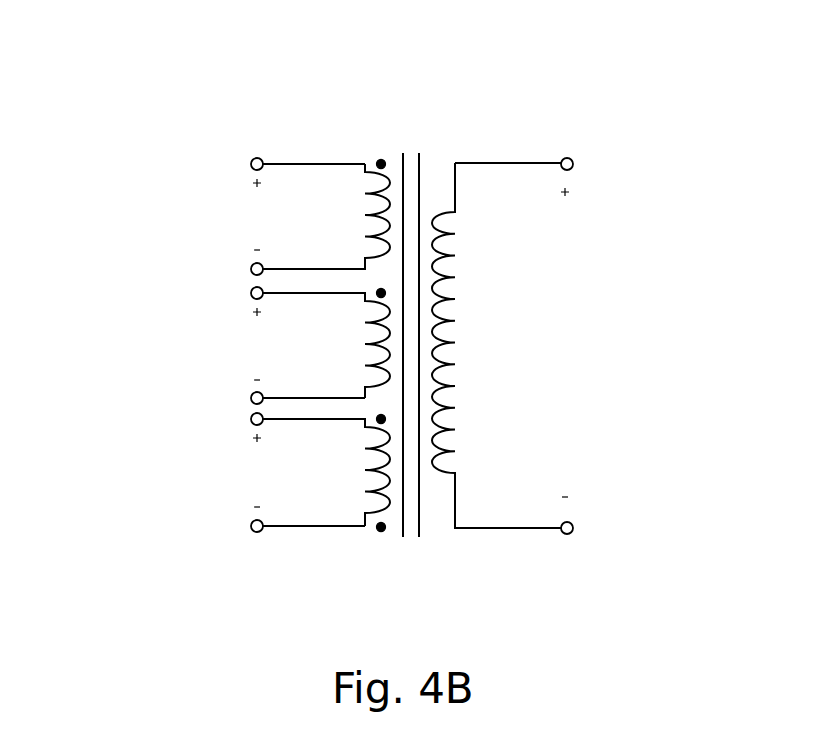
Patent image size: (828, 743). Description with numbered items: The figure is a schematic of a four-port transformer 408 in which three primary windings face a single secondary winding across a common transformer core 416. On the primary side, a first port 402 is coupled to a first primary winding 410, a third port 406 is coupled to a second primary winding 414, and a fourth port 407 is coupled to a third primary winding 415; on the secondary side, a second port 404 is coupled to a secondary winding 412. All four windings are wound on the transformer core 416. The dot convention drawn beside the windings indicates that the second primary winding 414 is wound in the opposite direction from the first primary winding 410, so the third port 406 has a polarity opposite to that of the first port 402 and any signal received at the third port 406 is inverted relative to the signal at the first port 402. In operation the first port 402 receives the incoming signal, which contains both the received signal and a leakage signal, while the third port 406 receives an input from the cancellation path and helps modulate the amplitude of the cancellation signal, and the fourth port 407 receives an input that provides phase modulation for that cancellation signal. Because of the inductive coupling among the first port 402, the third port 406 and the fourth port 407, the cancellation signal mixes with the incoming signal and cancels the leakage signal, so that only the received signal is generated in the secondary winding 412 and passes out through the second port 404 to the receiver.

The four-port transformer 408 is at (362, 112).
The transformer core 416 is at (419, 520).
The fourth port 407 is at (223, 222).
The first port 402 is at (218, 349).
The third port 406 is at (223, 476).
The second port 404 is at (550, 342).
The third primary winding 415 is at (282, 162).
The first primary winding 410 is at (302, 398).
The second primary winding 414 is at (302, 527).
The secondary winding 412 is at (508, 163).